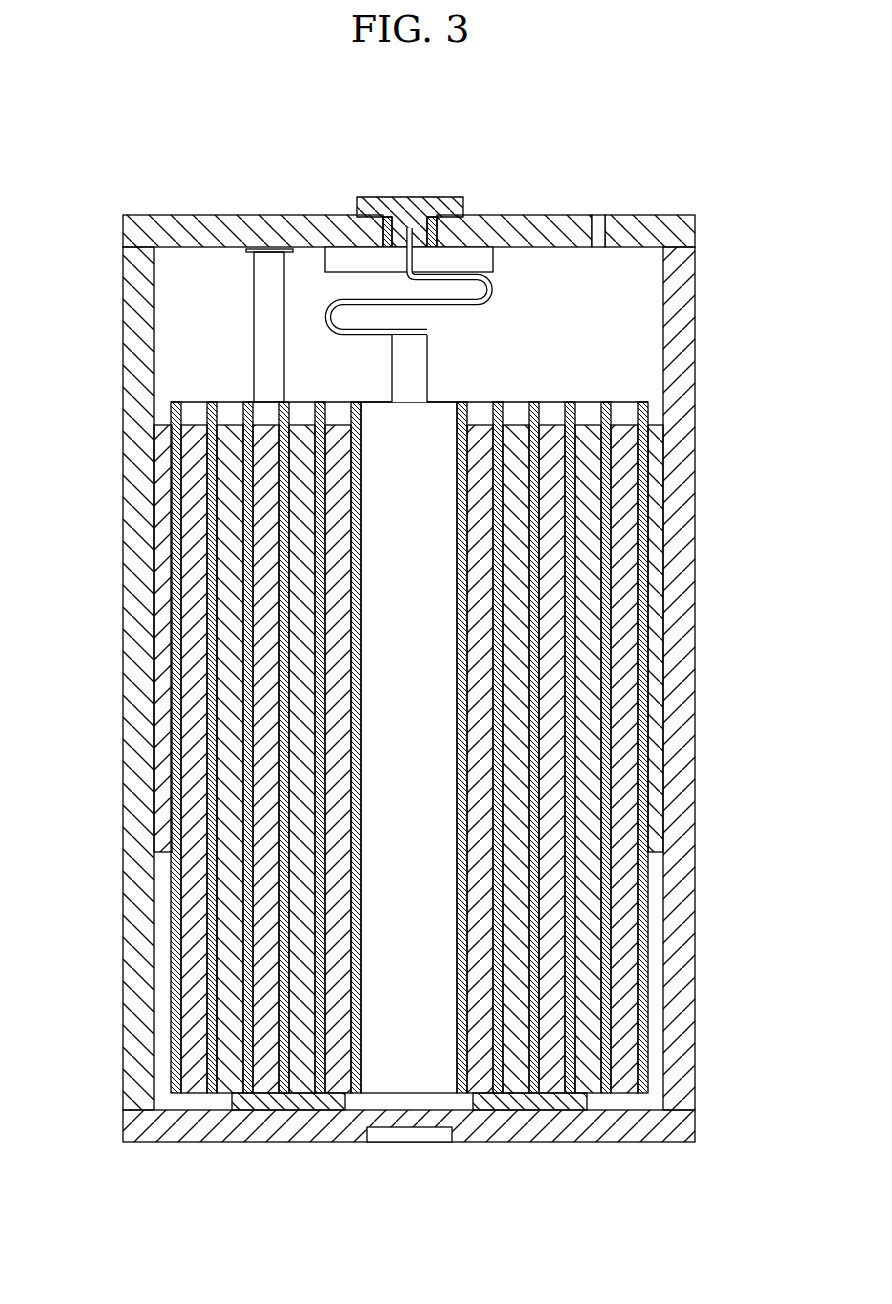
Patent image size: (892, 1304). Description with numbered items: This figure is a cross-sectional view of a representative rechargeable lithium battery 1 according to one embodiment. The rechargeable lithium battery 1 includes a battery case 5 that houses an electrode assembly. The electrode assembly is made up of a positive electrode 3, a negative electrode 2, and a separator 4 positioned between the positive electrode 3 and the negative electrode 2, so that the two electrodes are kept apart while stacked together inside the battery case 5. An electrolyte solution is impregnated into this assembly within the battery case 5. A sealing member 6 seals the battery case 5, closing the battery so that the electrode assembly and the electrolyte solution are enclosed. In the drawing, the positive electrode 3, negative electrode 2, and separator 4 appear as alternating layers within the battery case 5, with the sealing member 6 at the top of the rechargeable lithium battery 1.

The rechargeable lithium battery 1 is at (596, 173).
The negative electrode 2 is at (627, 917).
The positive electrode 3 is at (233, 915).
The separator 4 is at (210, 1050).
The battery case 5 is at (140, 312).
The sealing member 6 is at (364, 197).